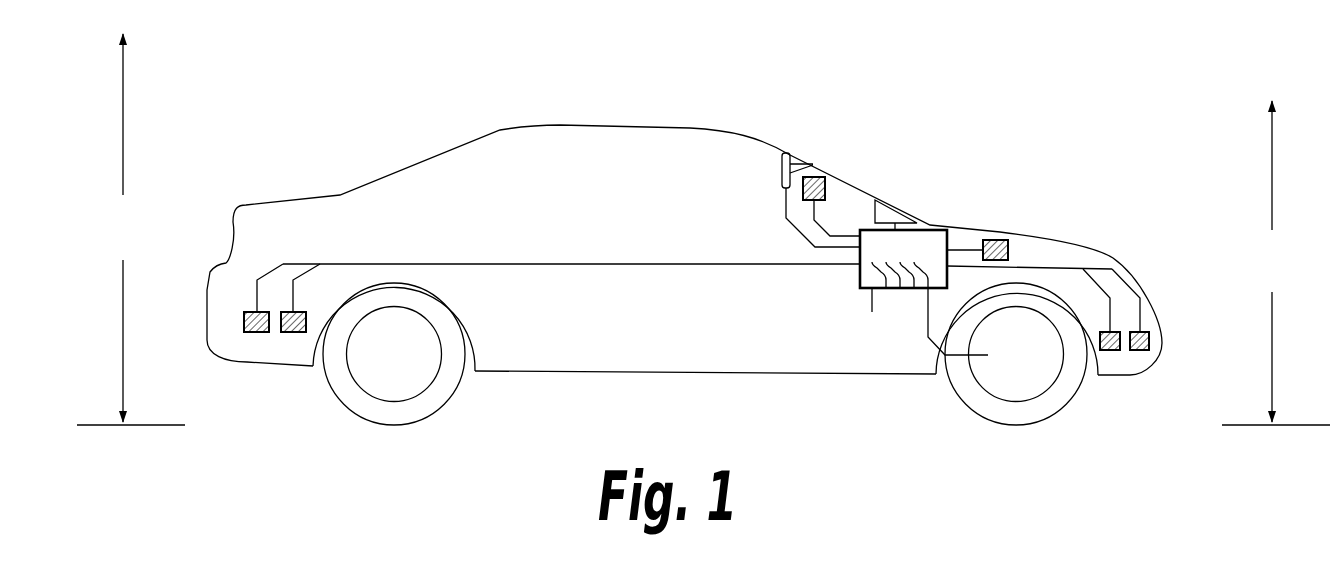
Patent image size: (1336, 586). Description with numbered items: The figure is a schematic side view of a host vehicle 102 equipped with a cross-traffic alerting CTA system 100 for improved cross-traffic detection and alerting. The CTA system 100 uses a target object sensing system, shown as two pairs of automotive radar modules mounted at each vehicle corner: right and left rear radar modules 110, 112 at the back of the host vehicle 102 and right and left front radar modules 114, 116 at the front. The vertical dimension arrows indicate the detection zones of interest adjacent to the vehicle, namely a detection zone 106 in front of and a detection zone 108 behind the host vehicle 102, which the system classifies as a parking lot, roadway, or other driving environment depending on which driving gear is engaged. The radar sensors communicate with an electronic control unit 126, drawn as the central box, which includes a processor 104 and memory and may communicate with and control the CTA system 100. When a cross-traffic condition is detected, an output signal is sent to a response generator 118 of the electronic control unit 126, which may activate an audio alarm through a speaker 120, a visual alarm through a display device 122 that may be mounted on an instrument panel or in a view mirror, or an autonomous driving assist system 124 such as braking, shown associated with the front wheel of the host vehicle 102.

The CTA system 100 is at (785, 250).
The host vehicle 102 is at (500, 102).
The processor 104 is at (914, 289).
The detection zone 106 is at (1276, 263).
The detection zone 108 is at (131, 229).
The right rear radar module 110 is at (253, 333).
The left rear radar module 112 is at (287, 333).
The right front radar module 114 is at (1115, 351).
The left front radar module 116 is at (1148, 342).
The response generator 118 is at (898, 290).
The speaker 120 is at (826, 181).
The display device 122 is at (885, 218).
The autonomous driving assist system 124 is at (1036, 379).
The electronic control unit 126 is at (930, 235).